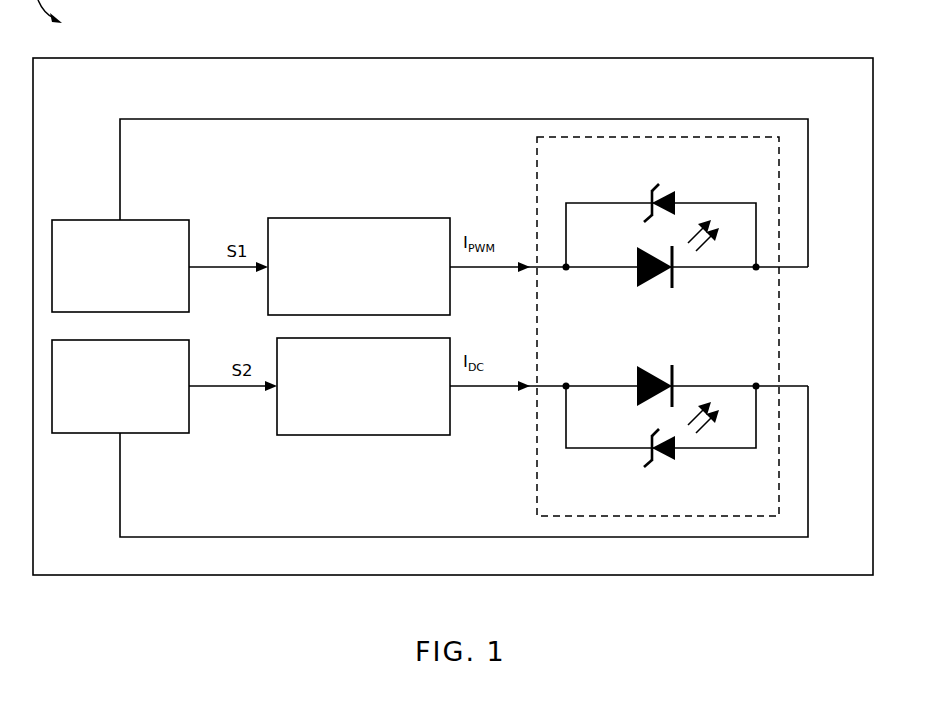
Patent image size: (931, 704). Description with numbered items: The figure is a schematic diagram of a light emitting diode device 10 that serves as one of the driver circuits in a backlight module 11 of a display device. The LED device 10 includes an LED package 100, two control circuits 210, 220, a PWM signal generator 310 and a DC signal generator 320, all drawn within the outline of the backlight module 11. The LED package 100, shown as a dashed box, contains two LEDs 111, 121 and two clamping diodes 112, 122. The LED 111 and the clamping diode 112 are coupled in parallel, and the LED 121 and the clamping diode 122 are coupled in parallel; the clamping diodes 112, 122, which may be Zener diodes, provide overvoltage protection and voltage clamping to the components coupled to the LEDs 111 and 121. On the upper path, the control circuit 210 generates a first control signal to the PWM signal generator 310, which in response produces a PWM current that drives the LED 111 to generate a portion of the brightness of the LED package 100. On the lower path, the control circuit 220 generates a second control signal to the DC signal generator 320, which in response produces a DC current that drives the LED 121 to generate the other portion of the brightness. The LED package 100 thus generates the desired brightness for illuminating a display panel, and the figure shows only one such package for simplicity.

The LED device 10 is at (108, 135).
The backlight module 11 is at (513, 58).
The LED package 100 is at (780, 302).
The LED 111 is at (647, 289).
The clamping diode 112 is at (666, 190).
The LED 121 is at (658, 376).
The clamping diode 122 is at (664, 463).
The control circuit 210 is at (120, 266).
The control circuit 220 is at (120, 386).
The PWM signal generator 310 is at (359, 266).
The DC signal generator 320 is at (363, 386).